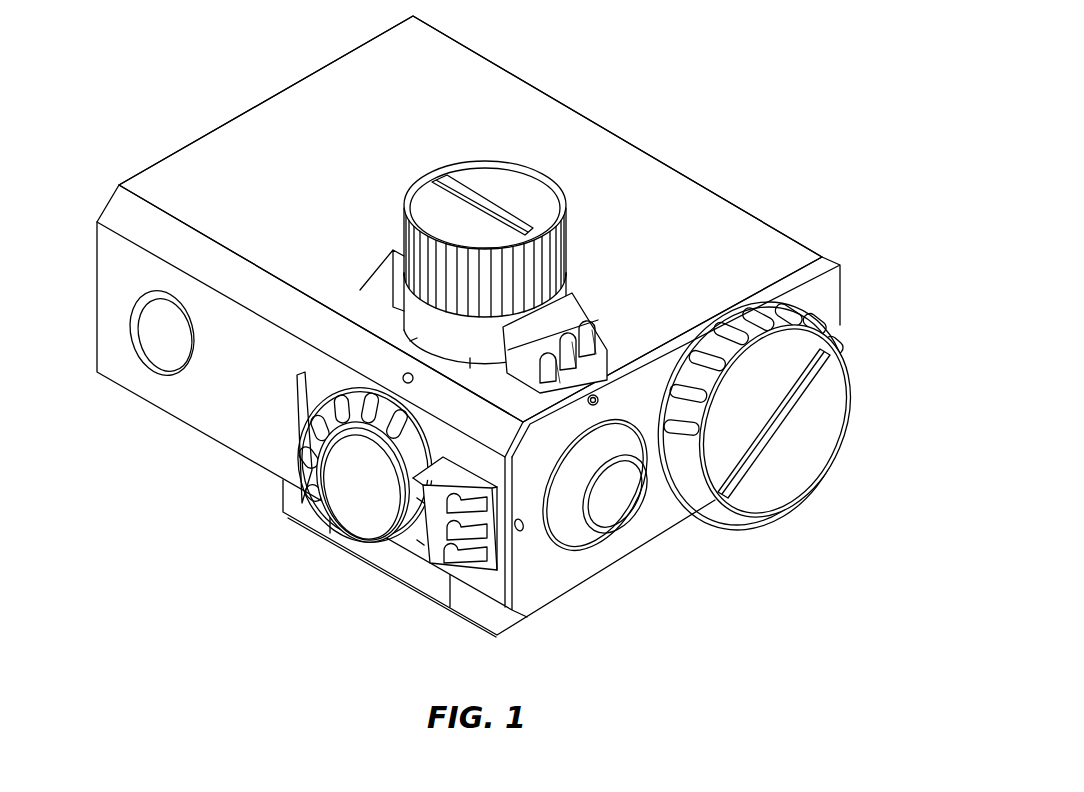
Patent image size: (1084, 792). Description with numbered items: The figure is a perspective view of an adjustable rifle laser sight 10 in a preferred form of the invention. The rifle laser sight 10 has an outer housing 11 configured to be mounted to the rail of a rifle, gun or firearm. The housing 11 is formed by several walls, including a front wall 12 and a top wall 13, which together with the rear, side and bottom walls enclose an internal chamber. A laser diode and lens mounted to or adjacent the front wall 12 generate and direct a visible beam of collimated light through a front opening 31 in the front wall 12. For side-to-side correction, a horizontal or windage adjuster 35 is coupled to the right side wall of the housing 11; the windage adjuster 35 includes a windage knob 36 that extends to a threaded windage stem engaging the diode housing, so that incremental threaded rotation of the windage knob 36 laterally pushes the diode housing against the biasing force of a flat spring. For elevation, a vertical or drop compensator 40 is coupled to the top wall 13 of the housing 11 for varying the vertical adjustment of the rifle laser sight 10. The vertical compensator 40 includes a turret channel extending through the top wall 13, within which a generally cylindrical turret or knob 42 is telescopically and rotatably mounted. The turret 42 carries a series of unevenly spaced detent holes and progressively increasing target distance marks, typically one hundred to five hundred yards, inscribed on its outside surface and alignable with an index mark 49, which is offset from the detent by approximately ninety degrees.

The adjustable rifle laser sight 10 is at (502, 326).
The outer housing 11 is at (740, 236).
The front wall 12 is at (825, 293).
The top wall 13 is at (705, 211).
The front opening 31 is at (638, 515).
The windage adjuster 35 is at (362, 477).
The windage knob 36 is at (356, 500).
The vertical compensator 40 is at (547, 183).
The turret 42 is at (567, 238).
The index mark 49 is at (402, 377).